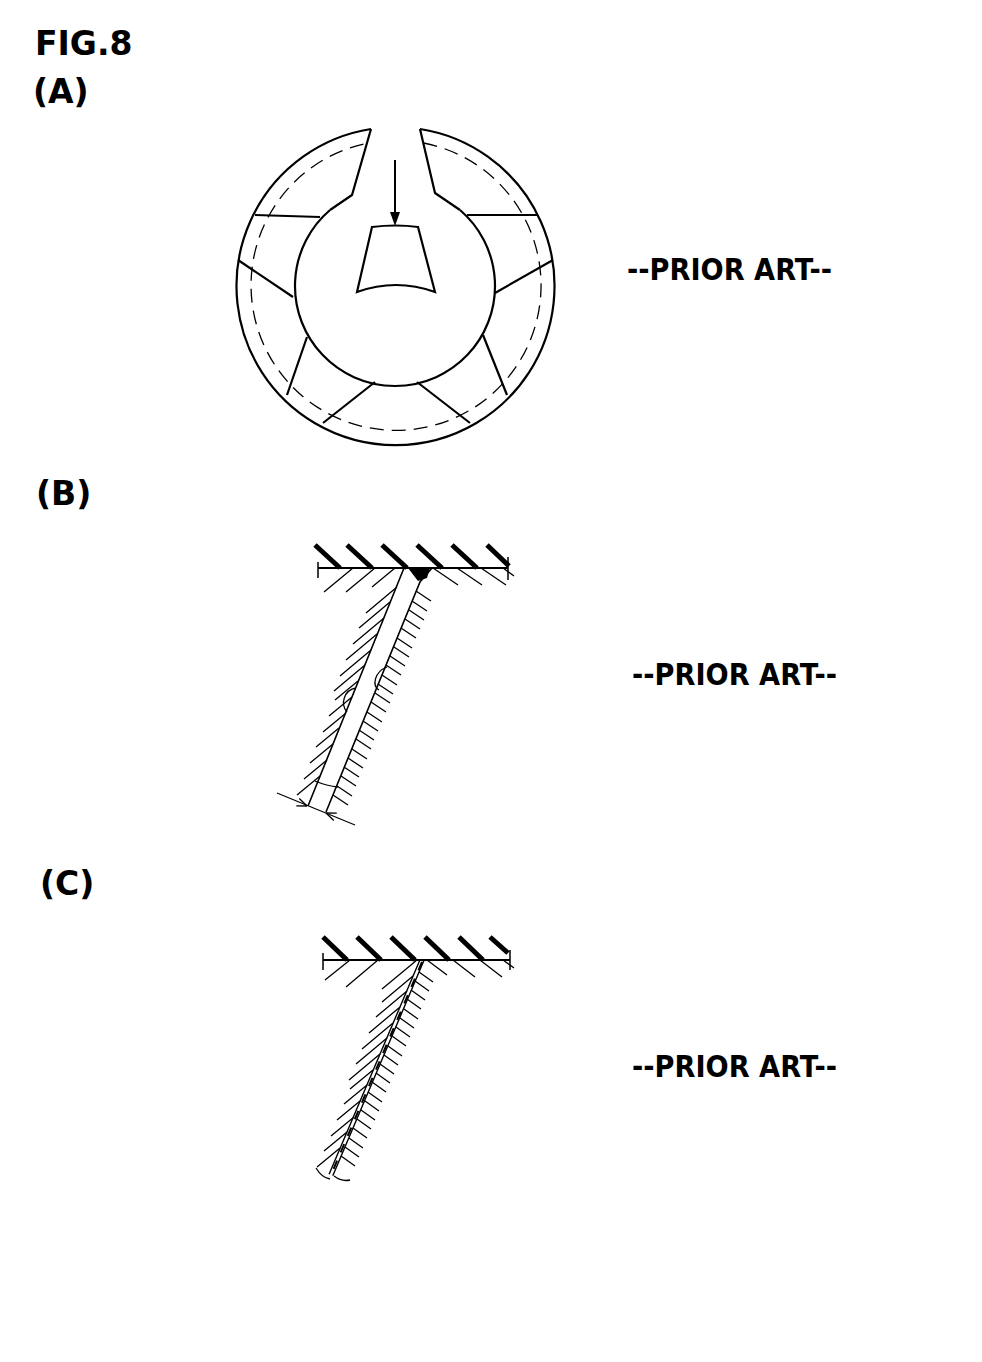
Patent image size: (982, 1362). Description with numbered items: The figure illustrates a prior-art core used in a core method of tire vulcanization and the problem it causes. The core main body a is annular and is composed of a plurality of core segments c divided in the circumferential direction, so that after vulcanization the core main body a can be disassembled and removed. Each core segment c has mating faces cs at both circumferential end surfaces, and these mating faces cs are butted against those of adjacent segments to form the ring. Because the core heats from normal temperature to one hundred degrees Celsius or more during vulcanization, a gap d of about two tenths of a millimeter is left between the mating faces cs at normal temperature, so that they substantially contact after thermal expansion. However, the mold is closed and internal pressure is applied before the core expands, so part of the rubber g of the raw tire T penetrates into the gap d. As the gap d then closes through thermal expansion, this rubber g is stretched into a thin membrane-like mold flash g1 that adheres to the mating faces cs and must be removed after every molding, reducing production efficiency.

The core main body a is at (525, 168).
The core segments c is at (290, 167).
The mating faces cs is at (367, 152).
The raw tire T is at (412, 518).
The rubber g is at (422, 583).
The gap d is at (313, 813).
The membrane-like mold flash g1 is at (392, 1048).